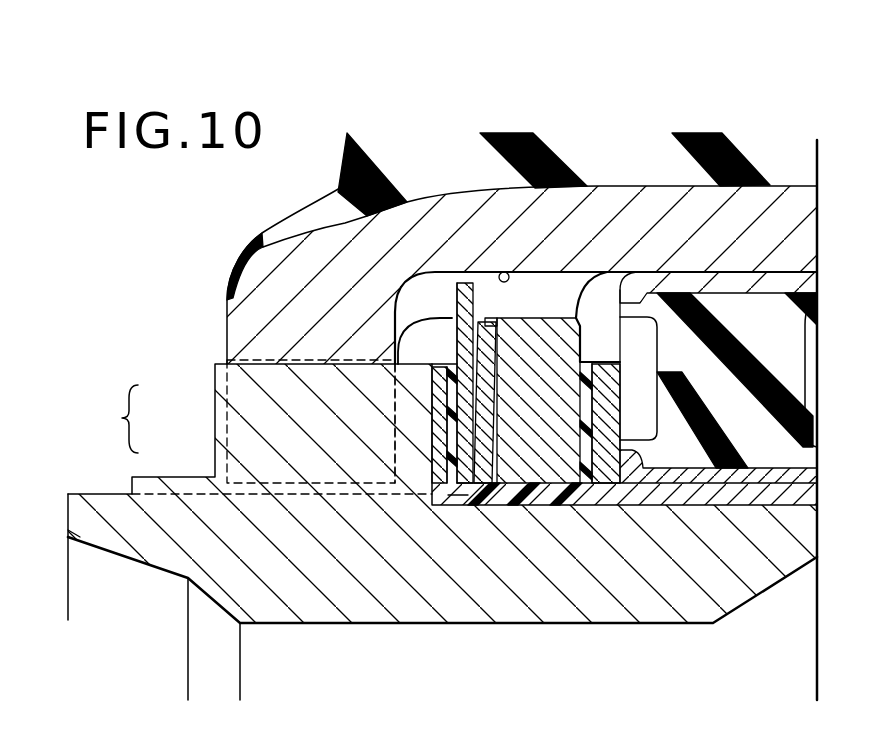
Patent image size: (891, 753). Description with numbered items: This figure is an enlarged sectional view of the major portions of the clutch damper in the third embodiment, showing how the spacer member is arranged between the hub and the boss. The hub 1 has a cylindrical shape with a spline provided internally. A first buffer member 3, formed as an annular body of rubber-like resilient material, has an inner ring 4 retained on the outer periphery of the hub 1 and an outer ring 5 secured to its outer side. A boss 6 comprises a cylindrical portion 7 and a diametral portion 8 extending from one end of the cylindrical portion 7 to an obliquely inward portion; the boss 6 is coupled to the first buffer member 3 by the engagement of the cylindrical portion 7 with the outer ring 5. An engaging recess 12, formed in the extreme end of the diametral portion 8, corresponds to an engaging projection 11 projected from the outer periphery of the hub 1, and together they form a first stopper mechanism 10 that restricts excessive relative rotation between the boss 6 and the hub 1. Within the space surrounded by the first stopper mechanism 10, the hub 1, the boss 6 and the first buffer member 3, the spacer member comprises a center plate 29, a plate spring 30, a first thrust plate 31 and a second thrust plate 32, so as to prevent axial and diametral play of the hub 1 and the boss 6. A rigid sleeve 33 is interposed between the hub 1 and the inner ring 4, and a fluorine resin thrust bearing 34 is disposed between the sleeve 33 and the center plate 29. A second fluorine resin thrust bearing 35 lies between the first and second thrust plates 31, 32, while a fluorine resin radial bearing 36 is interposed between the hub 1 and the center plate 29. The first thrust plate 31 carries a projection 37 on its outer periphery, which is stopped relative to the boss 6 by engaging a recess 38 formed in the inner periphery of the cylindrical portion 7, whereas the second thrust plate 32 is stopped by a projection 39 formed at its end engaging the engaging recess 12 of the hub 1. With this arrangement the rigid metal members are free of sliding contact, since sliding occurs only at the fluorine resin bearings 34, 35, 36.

The hub 1 is at (673, 578).
The first buffer member 3 is at (770, 354).
The inner ring 4 is at (787, 477).
The outer ring 5 is at (780, 282).
The boss 6 is at (797, 249).
The cylindrical portion 7 is at (641, 216).
The diametral portion 8 is at (268, 327).
The first stopper mechanism 10 is at (114, 419).
The engaging projection 11 is at (277, 443).
The engaging recess 12 is at (288, 362).
The center plate 29 is at (532, 352).
The plate spring 30 is at (489, 318).
The first thrust plate 31 is at (465, 482).
The second thrust plate 32 is at (440, 426).
The sleeve 33 is at (793, 497).
The thrust bearing 34 is at (590, 482).
The thrust bearing 35 is at (448, 482).
The radial bearing 36 is at (522, 482).
The projection 37 is at (457, 317).
The recess 38 is at (506, 271).
The projection 39 is at (416, 428).